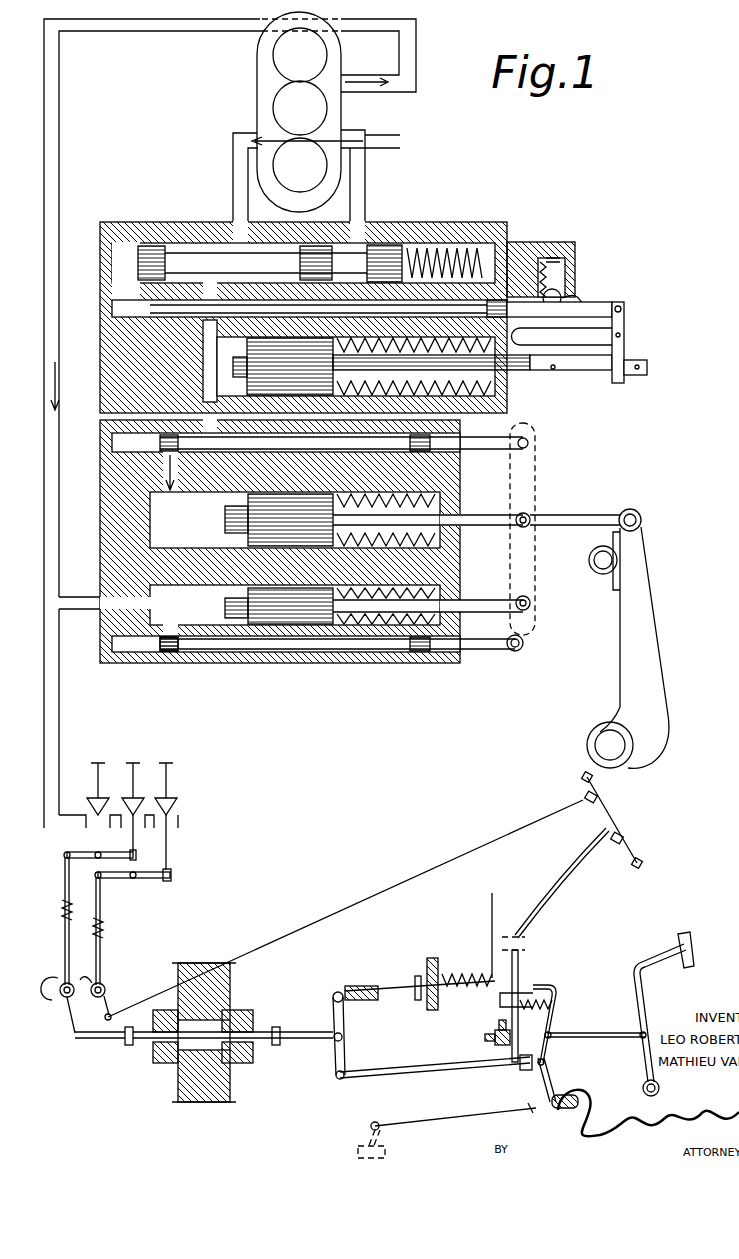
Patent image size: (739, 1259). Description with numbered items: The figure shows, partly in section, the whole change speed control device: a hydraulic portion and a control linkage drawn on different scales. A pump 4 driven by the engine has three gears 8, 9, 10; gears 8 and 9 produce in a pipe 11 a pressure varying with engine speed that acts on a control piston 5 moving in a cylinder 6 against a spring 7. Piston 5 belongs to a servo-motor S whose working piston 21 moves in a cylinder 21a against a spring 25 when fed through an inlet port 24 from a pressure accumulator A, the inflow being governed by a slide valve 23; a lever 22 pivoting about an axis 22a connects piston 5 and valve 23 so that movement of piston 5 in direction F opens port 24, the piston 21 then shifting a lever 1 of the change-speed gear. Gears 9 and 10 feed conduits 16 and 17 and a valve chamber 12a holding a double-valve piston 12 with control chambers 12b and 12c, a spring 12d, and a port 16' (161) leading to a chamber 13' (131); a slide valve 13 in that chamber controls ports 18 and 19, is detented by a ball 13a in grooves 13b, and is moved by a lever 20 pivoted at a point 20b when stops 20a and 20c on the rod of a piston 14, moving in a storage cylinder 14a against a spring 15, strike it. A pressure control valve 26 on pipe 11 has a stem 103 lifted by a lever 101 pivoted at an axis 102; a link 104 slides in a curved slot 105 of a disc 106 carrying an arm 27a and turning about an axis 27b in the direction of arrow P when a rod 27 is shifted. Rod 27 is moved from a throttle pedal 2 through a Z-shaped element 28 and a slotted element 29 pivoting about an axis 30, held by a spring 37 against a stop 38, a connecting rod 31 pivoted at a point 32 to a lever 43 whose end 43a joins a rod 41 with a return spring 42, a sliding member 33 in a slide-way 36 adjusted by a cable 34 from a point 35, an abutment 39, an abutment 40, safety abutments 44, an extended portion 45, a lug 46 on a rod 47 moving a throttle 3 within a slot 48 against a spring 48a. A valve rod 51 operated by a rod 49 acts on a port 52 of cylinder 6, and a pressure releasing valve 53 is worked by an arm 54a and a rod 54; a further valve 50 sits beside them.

The lever 1 is at (633, 630).
The throttle pedal 2 is at (642, 1003).
The throttle 3 is at (387, 1142).
The pump 4 is at (346, 66).
The control piston 5 is at (287, 625).
The cylinder 6 is at (418, 652).
The spring 7 is at (372, 628).
The gear 8 is at (268, 47).
The gear 9 is at (290, 103).
The gear 10 is at (270, 158).
The pipe 11 is at (58, 362).
The double-valve piston 12 is at (178, 222).
The valve chamber 12a is at (263, 227).
The control chamber 12b is at (107, 217).
The control chamber 12c is at (497, 237).
The spring 12d is at (468, 237).
The slide valve 13 is at (321, 262).
The chamber 13' is at (328, 258).
The chamber 131 is at (328, 258).
The spring-pressed ball 13a is at (565, 298).
The grooves 13b is at (590, 305).
The piston 14 is at (250, 385).
The cylinder 14a is at (220, 366).
The spring 15 is at (507, 388).
The conduit 16 is at (218, 199).
The port 16' is at (124, 199).
The port 161 is at (124, 199).
The conduit 17 is at (353, 197).
The port 18 is at (85, 232).
The port 19 is at (508, 229).
The lever 20 is at (627, 353).
The stop 20a is at (555, 369).
The pivot point 20b is at (623, 335).
The stop 20c is at (645, 363).
The working piston 21 is at (257, 517).
The cylinder 21a is at (163, 532).
The lever 22 is at (530, 568).
The axis 22a is at (537, 513).
The slide valve 23 is at (460, 435).
The inlet port 24 is at (168, 477).
The spring 25 is at (435, 545).
The pressure control valve 26 is at (133, 790).
The rod 27 is at (293, 1045).
The arm 27a is at (70, 1036).
The axis 27b is at (100, 960).
The Z-shaped element 28 is at (558, 992).
The slotted element 29 is at (560, 1030).
The axis 30 is at (567, 1067).
The connecting rod 31 is at (390, 1073).
The pivot 32 is at (337, 1078).
The sliding member 33 is at (523, 1073).
The flexible cable 34 is at (548, 870).
The operating point 35 is at (622, 823).
The slide-way 36 is at (500, 1017).
The spring 37 is at (560, 1012).
The stop 38 is at (487, 1007).
The abutment 39 is at (507, 1040).
The abutment 40 is at (540, 978).
The rod 41 is at (397, 988).
The return spring 42 is at (490, 888).
The lever 43 is at (343, 1058).
The end 43a is at (335, 993).
The safety abutments 44 is at (127, 1047).
The extended portion 45 is at (514, 1101).
The lug 46 is at (554, 1073).
The rod 47 is at (495, 1113).
The elongated slot 48 is at (578, 1101).
The spring 48a is at (630, 1068).
The rod 49 is at (535, 425).
The valve 50 is at (95, 790).
The valve rod 51 is at (173, 652).
The port 52 is at (157, 640).
The pressure releasing valve 53 is at (170, 810).
The rod 54 is at (598, 791).
The arm 54a is at (110, 1002).
The lever 101 is at (115, 852).
The axis 102 is at (102, 860).
The valve stem 103 is at (140, 845).
The link 104 is at (65, 892).
The curved slot 105 is at (73, 1018).
The disc 106 is at (105, 943).
The pressure accumulator A is at (117, 383).
The servo-motor S is at (447, 507).
The direction F is at (533, 603).
The arrow P is at (55, 948).